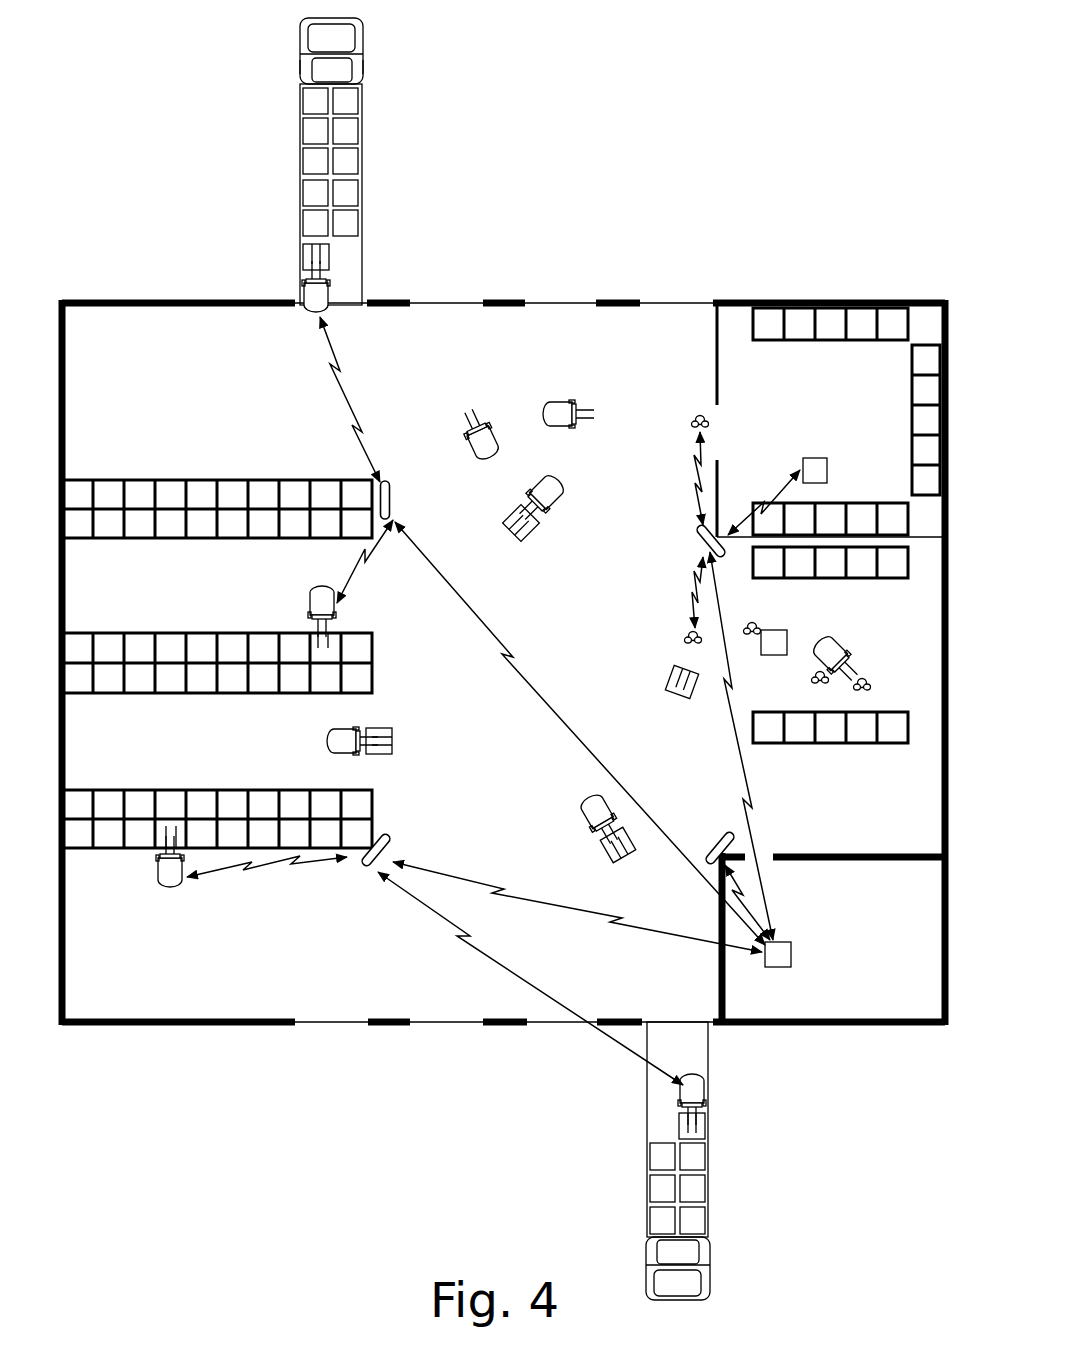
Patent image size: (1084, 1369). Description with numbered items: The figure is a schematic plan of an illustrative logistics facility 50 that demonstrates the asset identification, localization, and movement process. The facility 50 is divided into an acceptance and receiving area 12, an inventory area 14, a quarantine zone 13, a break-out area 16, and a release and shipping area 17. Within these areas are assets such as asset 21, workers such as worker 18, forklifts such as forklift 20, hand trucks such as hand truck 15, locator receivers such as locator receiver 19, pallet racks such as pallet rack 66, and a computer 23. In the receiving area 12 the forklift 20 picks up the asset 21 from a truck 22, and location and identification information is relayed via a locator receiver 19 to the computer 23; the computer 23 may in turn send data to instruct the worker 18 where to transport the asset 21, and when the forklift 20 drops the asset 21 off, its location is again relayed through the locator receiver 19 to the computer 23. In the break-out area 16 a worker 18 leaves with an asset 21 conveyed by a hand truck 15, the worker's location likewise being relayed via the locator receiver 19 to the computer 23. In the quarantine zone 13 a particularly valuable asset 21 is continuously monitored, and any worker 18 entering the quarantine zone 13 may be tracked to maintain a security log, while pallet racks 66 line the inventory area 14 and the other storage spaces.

The acceptance and receiving area 12 is at (490, 273).
The quarantine zone 13 is at (800, 433).
The inventory area 14 is at (178, 438).
The hand truck 15 is at (678, 662).
The break-out area 16 is at (853, 605).
The release and shipping area 17 is at (548, 1072).
The worker 18 is at (682, 420).
The locator receiver 19 is at (392, 503).
The forklift 20 is at (325, 310).
The asset 21 is at (303, 258).
The truck 22 is at (298, 45).
The computer 23 is at (792, 952).
The logistics facility 50 is at (222, 1027).
The pallet rack 66 is at (165, 482).